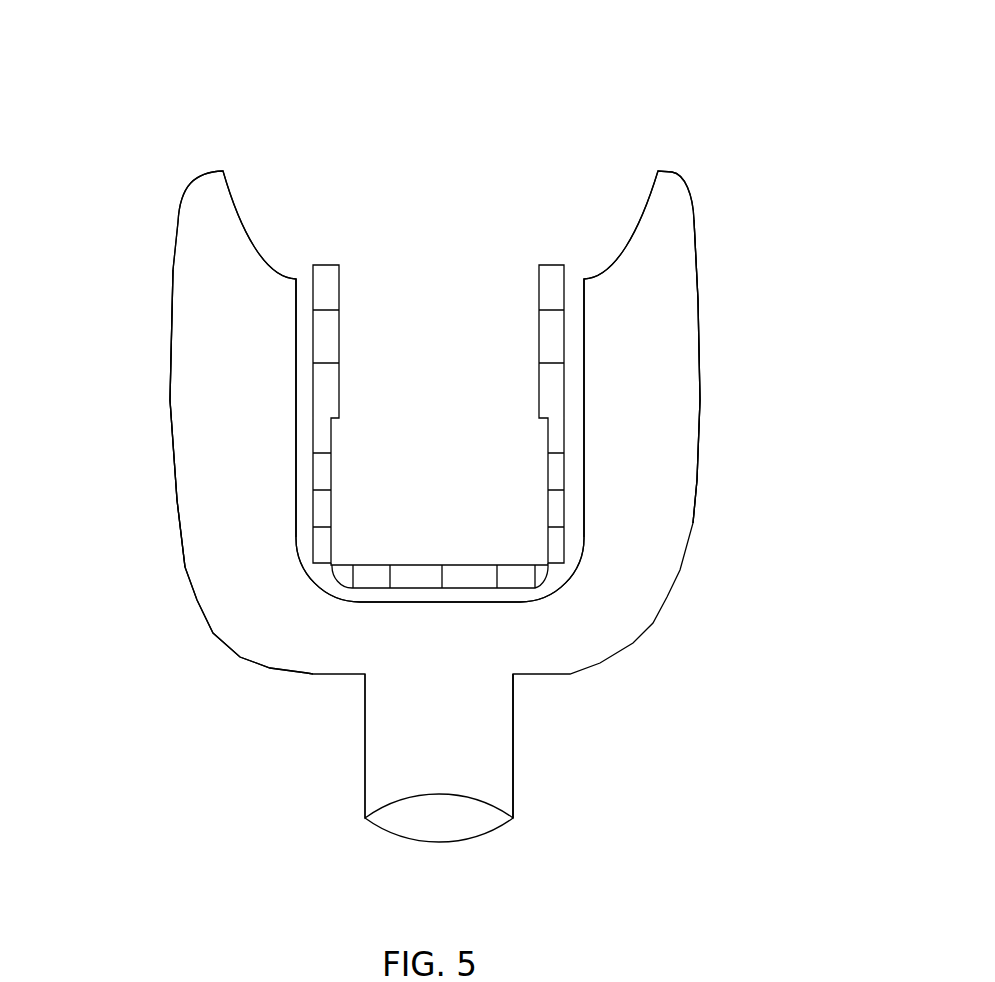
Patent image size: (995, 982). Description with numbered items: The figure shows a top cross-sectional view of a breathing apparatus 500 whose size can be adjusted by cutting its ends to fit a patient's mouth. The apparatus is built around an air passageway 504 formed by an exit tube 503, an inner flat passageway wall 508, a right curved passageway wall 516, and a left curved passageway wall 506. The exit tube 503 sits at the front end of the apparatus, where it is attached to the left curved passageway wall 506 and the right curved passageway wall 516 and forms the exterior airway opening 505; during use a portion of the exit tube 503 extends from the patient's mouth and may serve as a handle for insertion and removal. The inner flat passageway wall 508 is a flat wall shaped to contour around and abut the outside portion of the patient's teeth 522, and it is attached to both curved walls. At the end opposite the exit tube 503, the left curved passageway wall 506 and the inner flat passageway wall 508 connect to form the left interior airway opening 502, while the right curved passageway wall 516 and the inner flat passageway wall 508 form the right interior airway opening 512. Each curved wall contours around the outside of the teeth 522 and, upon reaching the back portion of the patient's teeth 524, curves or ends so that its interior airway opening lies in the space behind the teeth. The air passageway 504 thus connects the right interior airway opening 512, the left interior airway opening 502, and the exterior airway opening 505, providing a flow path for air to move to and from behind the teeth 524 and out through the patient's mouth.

The breathing apparatus 500 is at (279, 100).
The left interior airway opening 502 is at (280, 212).
The right interior airway opening 512 is at (608, 192).
The air passageway 504 is at (655, 285).
The right curved passageway wall 516 is at (700, 402).
The left curved passageway wall 506 is at (182, 565).
The exit tube 503 is at (513, 720).
The exterior airway opening 505 is at (465, 832).
The inner flat passageway wall 508 is at (296, 362).
The outside portion of the patient's teeth 522 is at (438, 405).
The back portion of the patient's teeth 524 is at (332, 300).